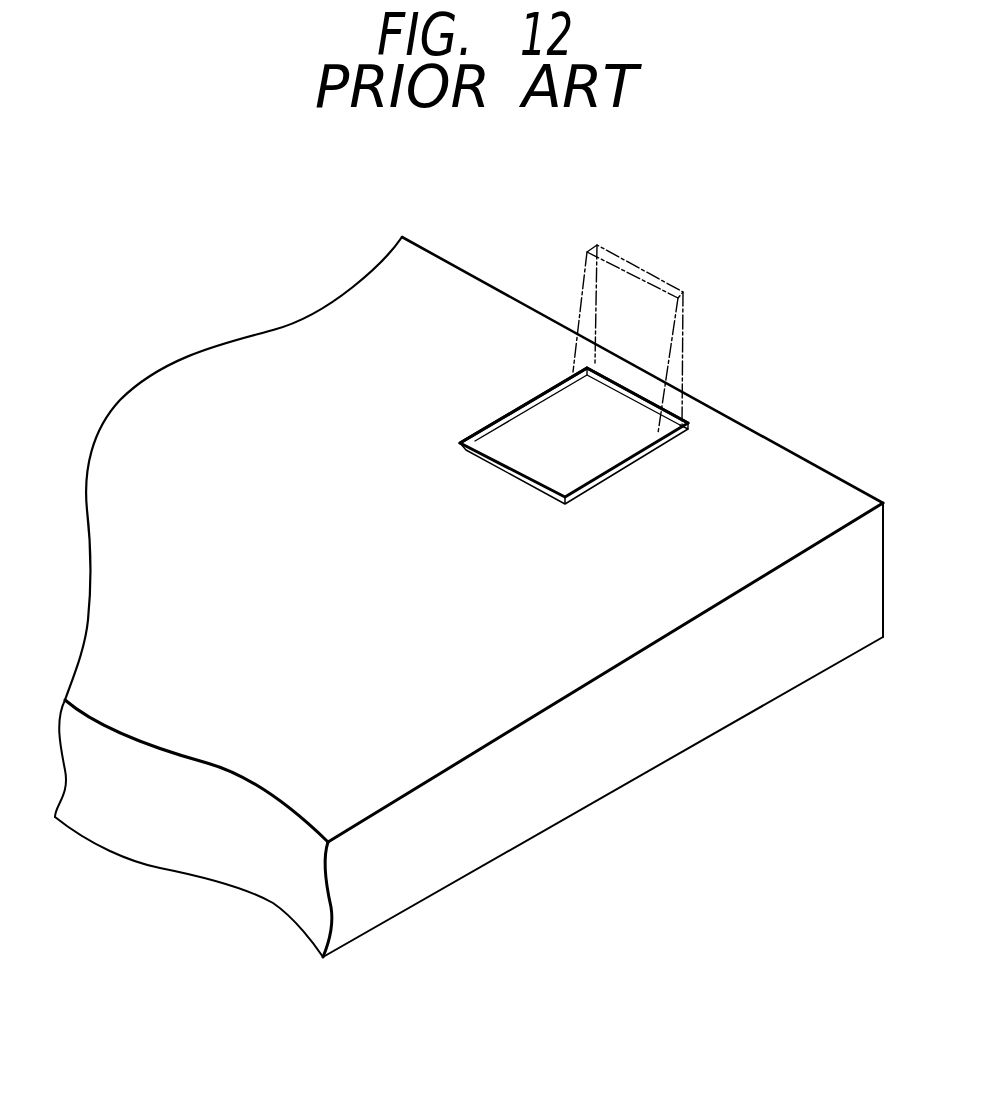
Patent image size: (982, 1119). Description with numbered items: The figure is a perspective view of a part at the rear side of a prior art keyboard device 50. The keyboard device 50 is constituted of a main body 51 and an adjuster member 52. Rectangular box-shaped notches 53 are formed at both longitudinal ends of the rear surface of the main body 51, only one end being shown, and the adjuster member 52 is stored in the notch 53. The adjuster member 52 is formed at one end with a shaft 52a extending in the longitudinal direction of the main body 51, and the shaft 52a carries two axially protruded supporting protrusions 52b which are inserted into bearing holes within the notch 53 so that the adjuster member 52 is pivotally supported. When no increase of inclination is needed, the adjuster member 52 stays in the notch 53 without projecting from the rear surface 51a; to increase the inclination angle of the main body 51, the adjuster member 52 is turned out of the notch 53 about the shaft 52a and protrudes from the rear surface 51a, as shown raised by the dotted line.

The keyboard device 50 is at (757, 330).
The main body 51 is at (663, 745).
The rear surface 51a is at (433, 277).
The adjuster member 52 is at (522, 455).
The shaft 52a is at (592, 398).
The supporting protrusions 52b is at (567, 380).
The notch 53 is at (612, 478).